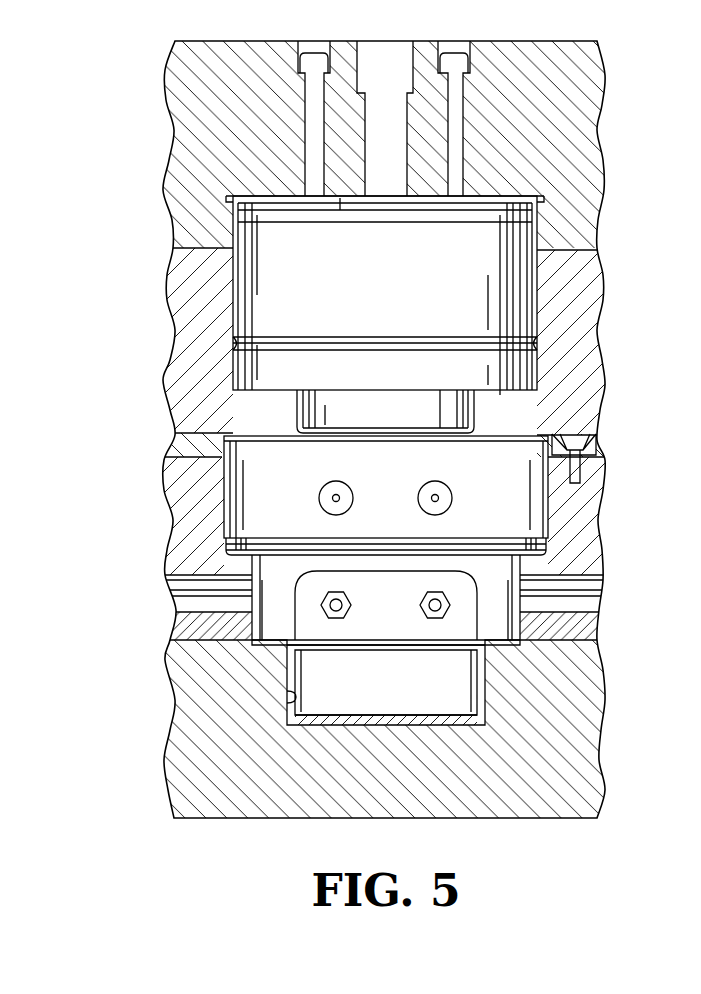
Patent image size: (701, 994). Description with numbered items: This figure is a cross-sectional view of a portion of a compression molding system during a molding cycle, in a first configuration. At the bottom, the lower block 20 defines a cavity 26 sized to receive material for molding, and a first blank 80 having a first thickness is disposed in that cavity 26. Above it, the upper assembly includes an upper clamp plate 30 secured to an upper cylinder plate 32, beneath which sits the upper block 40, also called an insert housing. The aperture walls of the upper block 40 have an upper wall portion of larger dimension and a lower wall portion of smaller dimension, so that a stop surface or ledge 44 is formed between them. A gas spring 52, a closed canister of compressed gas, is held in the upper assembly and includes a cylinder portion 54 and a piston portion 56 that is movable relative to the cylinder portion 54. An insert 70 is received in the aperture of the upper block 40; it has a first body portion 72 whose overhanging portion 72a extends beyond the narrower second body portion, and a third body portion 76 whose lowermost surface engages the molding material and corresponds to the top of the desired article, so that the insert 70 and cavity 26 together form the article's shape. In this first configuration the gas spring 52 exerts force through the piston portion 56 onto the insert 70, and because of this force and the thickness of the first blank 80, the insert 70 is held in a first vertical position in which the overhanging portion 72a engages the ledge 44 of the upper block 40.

The lower block 20 is at (210, 722).
The cavity 26 is at (293, 707).
The upper clamp plate 30 is at (195, 140).
The upper cylinder plate 32 is at (197, 348).
The upper block 40 is at (190, 484).
The ledge 44 is at (227, 567).
The gas spring 52 is at (280, 237).
The cylinder portion 54 is at (233, 243).
The piston portion 56 is at (295, 407).
The insert 70 is at (218, 448).
The first body portion 72 is at (238, 477).
The overhanging portion 72a is at (227, 537).
The third body portion 76 is at (318, 667).
The first blank 80 is at (382, 722).